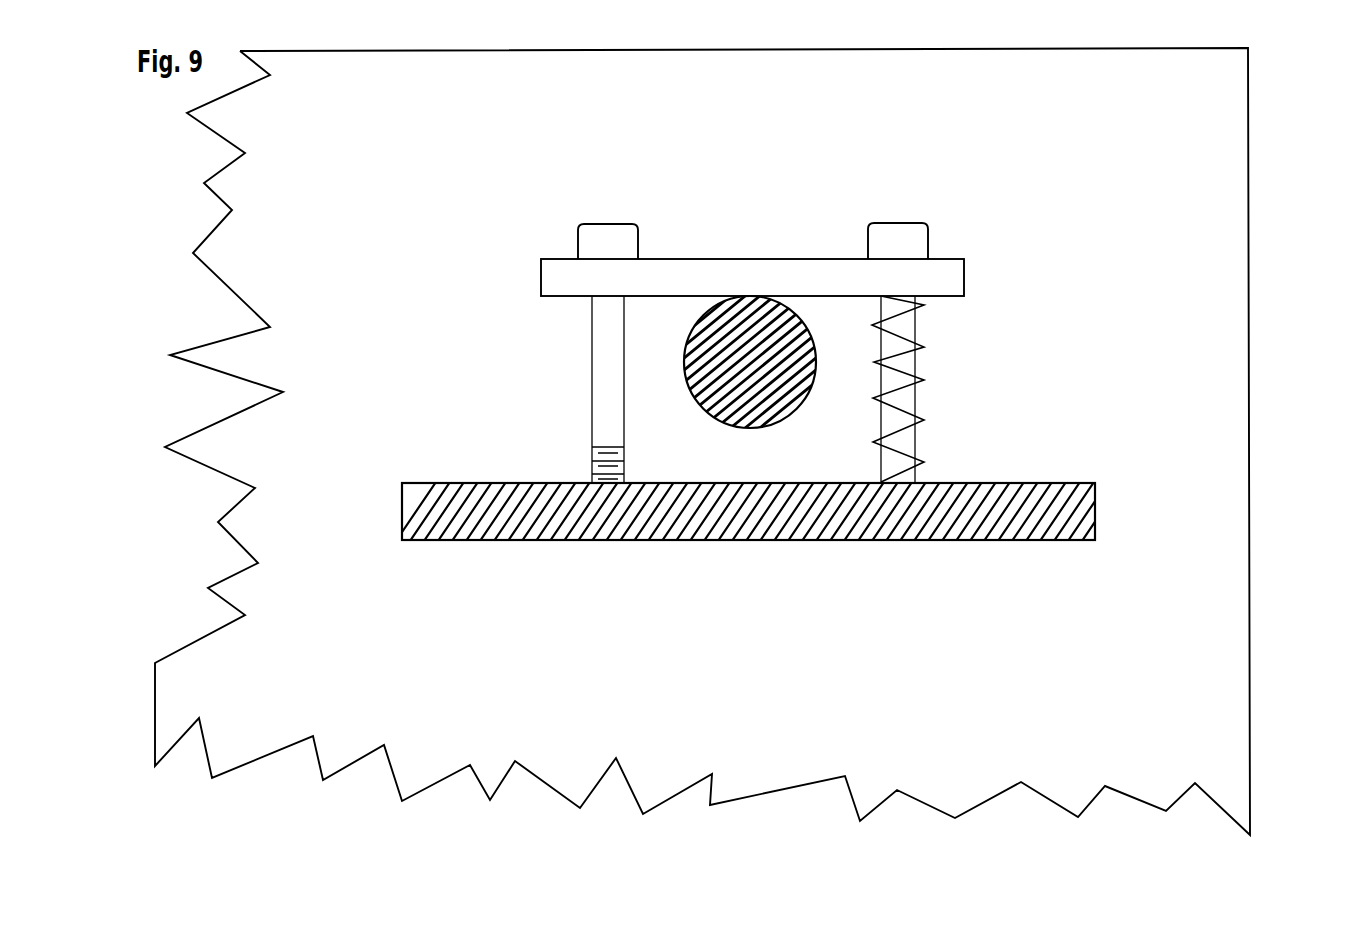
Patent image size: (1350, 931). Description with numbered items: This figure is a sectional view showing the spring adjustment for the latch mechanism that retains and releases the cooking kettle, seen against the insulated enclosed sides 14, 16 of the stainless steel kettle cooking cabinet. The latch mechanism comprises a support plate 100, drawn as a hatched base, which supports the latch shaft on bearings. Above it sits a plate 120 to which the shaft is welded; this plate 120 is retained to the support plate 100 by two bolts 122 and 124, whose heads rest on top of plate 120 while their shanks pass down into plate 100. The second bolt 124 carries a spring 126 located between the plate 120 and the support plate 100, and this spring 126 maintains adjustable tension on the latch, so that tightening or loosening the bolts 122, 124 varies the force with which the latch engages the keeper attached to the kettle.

The insulated enclosed side 16 is at (1249, 307).
The insulated enclosed side 14 is at (680, 704).
The plate 100 is at (893, 540).
The plate 120 is at (753, 272).
The bolt 122 is at (615, 228).
The bolt 124 is at (925, 222).
The spring 126 is at (924, 380).